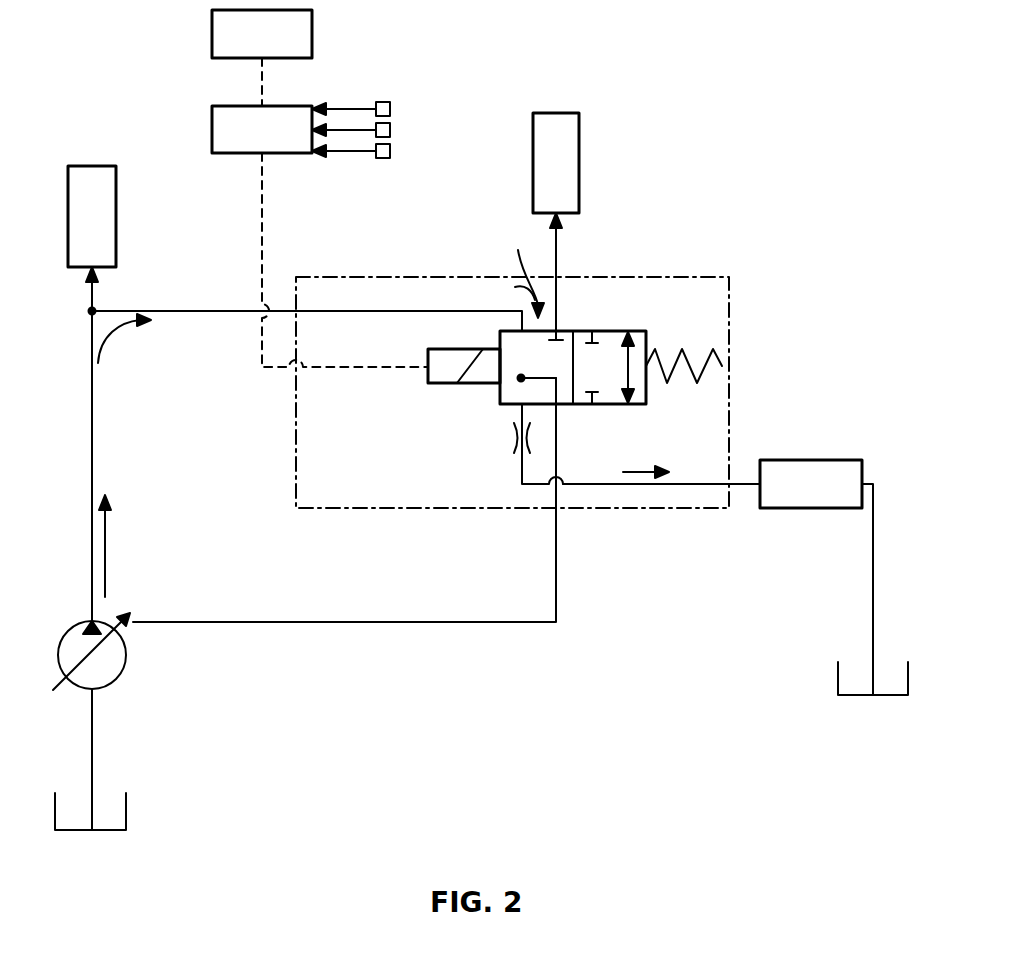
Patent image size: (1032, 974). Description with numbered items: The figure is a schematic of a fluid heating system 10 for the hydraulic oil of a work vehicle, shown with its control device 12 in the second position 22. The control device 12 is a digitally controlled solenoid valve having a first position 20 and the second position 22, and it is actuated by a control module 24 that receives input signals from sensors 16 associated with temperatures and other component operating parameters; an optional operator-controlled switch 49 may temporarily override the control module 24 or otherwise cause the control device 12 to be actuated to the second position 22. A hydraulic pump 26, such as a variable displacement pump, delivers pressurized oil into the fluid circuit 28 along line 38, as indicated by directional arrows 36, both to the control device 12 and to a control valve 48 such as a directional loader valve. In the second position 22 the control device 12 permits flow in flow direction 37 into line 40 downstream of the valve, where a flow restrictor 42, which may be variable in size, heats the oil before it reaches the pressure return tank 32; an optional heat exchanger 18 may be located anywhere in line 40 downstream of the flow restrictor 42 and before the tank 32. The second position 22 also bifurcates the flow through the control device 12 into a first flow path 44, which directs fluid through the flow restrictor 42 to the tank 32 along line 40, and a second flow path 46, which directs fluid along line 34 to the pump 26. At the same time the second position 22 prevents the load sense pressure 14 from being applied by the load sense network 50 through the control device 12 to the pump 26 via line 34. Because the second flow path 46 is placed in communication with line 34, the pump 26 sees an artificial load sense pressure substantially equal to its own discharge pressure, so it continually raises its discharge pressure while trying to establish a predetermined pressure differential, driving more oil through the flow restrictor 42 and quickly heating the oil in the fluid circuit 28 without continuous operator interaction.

The fluid heating system 10 is at (585, 35).
The control device 12 is at (465, 349).
The load sense pressure 14 is at (562, 217).
The sensors 16 is at (390, 107).
The heat exchanger 18 is at (812, 460).
The first position 20 is at (640, 331).
The second position 22 is at (533, 331).
The control module 24 is at (212, 128).
The hydraulic pump 26 is at (125, 667).
The fluid circuit 28 is at (455, 710).
The pressure return tank 32 is at (855, 695).
The line 34 is at (320, 622).
The directional arrows 36 is at (112, 330).
The flow direction 37 is at (646, 462).
The line 38 is at (152, 311).
The line 40 is at (745, 484).
The flow restrictor 42 is at (513, 447).
The first flow path 44 is at (520, 393).
The second flow path 46 is at (555, 388).
The control valve 48 is at (93, 166).
The operator-controlled switch 49 is at (312, 33).
The load sense network 50 is at (560, 113).